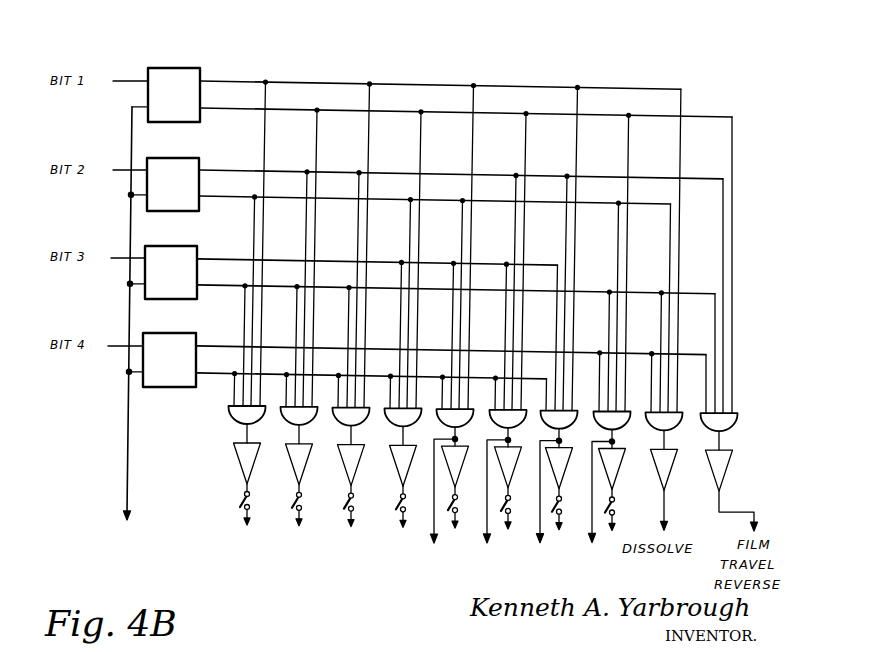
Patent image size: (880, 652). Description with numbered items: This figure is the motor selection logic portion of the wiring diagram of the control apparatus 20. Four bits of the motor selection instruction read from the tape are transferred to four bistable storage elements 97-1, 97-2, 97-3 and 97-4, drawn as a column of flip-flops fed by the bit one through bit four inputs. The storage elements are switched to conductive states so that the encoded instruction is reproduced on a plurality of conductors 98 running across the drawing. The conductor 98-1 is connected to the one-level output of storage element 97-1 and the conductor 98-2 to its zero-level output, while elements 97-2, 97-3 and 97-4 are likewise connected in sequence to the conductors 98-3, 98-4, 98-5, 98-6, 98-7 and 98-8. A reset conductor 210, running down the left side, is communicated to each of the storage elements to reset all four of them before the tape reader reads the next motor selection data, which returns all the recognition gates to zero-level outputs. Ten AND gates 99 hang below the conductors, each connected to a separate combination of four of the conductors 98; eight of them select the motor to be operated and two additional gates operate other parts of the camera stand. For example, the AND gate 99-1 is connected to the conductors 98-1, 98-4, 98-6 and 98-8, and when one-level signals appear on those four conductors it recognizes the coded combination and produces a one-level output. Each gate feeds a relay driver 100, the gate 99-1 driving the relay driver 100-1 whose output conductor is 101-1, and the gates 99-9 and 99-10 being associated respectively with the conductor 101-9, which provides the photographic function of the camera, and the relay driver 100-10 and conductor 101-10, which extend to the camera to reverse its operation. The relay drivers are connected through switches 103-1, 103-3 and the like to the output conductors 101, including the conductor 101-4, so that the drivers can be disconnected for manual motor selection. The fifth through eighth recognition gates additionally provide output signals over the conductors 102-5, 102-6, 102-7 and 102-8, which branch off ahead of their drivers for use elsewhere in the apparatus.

The control apparatus 20 is at (92, 32).
The bistable storage element 97-1 is at (163, 68).
The bistable storage element 97-2 is at (182, 158).
The bistable storage element 97-3 is at (178, 246).
The bistable storage element 97-4 is at (178, 333).
The conductors 98 is at (234, 64).
The conductor 98-1 is at (660, 90).
The conductor 98-2 is at (718, 117).
The conductor 98-3 is at (720, 178).
The conductor 98-4 is at (283, 197).
The conductor 98-5 is at (277, 260).
The conductor 98-6 is at (712, 293).
The conductor 98-7 is at (704, 354).
The conductor 98-8 is at (537, 377).
The AND gates 99 is at (210, 401).
The AND gate 99-1 is at (228, 426).
The AND gate 99-9 is at (683, 412).
The AND gate 99-10 is at (738, 421).
The relay drivers 100 is at (214, 475).
The relay driver 100-1 is at (233, 458).
The relay driver 100-10 is at (731, 458).
The conductors 101 is at (214, 522).
The output conductor 101-1 is at (240, 508).
The output conductor 101-4 is at (398, 510).
The conductor 101-9 is at (665, 500).
The conductor 101-10 is at (720, 500).
The conductor 102-5 is at (434, 530).
The conductor 102-6 is at (487, 530).
The conductor 102-7 is at (540, 530).
The conductor 102-8 is at (592, 530).
The switch 103-1 is at (252, 499).
The switch 103-3 is at (340, 503).
The conductor 210 is at (127, 470).